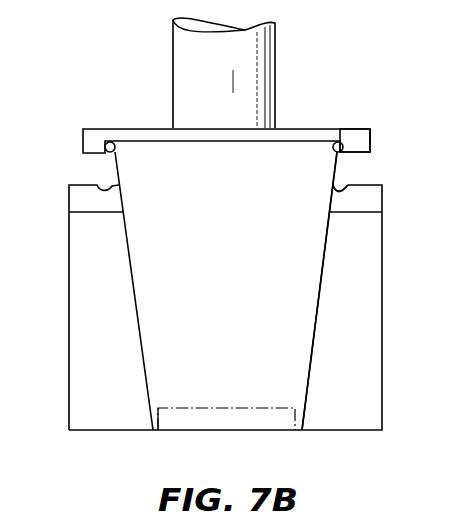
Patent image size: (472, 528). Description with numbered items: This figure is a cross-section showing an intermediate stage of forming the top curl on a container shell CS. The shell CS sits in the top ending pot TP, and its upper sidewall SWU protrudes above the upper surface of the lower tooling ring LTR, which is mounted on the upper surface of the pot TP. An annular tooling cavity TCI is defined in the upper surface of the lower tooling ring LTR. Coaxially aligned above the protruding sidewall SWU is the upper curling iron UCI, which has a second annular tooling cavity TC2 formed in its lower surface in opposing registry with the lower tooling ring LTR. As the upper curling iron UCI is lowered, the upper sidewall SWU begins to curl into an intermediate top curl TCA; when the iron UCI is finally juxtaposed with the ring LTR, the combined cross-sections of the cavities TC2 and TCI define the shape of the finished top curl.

The upper curling iron UCI is at (111, 104).
The second annular tooling cavity TC2 is at (338, 142).
The intermediate top curl TCA is at (106, 151).
The upper sidewall SWU is at (118, 168).
The container shell CS is at (317, 301).
The lower tooling ring LTR is at (78, 200).
The top ending pot TP is at (355, 340).
The annular tooling cavity TCI is at (346, 192).